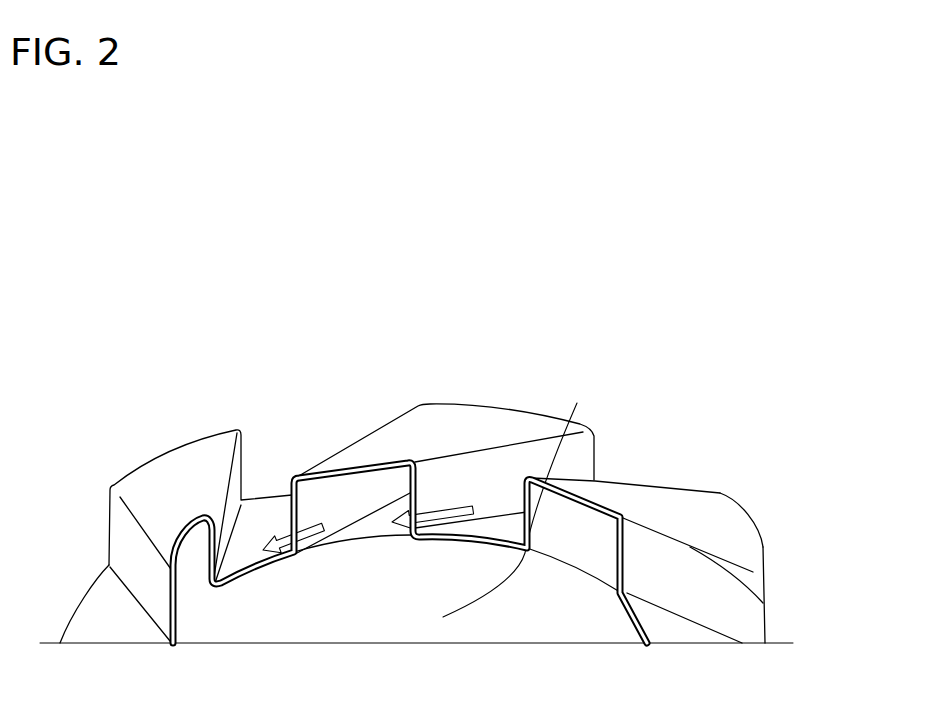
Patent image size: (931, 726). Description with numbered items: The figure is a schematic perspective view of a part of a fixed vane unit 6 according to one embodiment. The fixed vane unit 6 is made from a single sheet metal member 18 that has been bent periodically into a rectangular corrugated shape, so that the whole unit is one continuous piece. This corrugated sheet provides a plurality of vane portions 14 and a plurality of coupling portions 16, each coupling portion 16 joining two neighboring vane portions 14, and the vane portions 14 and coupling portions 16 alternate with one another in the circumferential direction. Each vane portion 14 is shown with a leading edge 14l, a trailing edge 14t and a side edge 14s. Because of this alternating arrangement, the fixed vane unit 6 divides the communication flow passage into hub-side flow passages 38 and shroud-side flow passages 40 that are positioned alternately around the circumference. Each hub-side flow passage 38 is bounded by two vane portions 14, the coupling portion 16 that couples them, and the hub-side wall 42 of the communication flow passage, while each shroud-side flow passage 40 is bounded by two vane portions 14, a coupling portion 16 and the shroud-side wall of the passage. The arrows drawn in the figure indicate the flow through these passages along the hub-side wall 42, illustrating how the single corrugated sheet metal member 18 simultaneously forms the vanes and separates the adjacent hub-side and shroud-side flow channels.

The fixed vane unit 6 is at (542, 317).
The vane portion 14 is at (236, 482).
The leading edge 14l is at (762, 542).
The side edge 14s is at (763, 603).
The trailing edge 14t is at (435, 632).
The coupling portion 16 is at (175, 463).
The single sheet metal member 18 is at (732, 515).
The hub-side flow passage 38 is at (193, 603).
The shroud-side flow passage 40 is at (337, 418).
The hub-side wall 42 is at (360, 532).